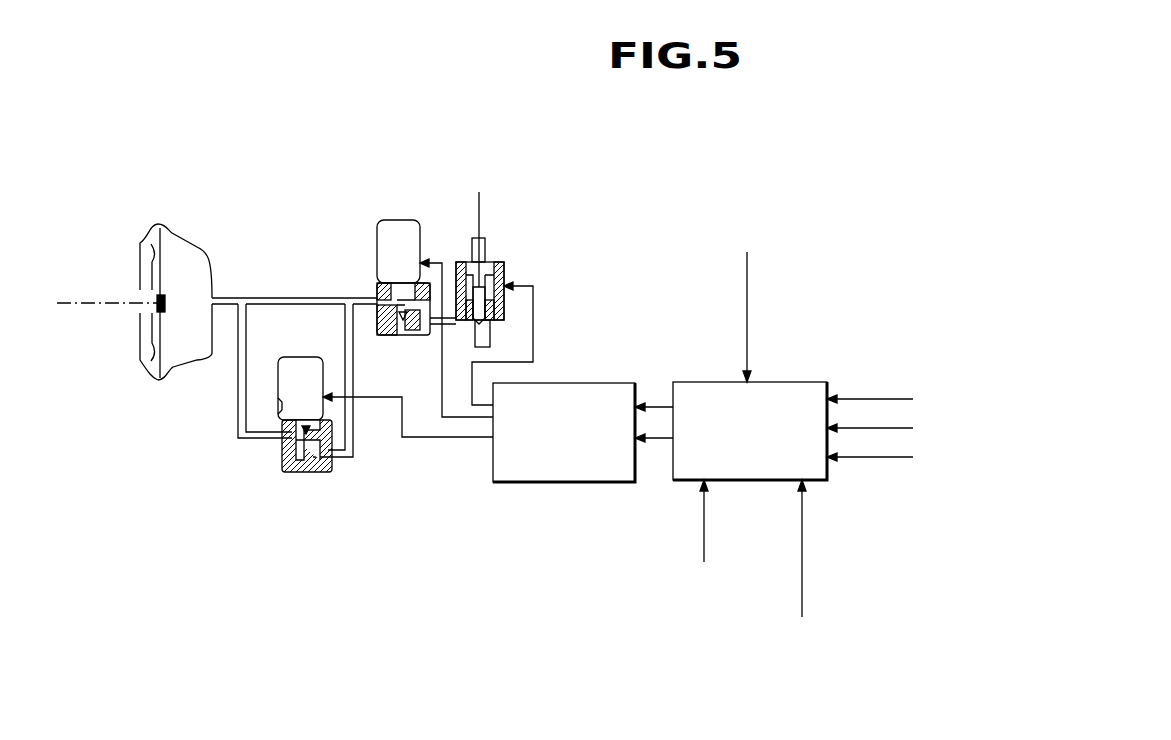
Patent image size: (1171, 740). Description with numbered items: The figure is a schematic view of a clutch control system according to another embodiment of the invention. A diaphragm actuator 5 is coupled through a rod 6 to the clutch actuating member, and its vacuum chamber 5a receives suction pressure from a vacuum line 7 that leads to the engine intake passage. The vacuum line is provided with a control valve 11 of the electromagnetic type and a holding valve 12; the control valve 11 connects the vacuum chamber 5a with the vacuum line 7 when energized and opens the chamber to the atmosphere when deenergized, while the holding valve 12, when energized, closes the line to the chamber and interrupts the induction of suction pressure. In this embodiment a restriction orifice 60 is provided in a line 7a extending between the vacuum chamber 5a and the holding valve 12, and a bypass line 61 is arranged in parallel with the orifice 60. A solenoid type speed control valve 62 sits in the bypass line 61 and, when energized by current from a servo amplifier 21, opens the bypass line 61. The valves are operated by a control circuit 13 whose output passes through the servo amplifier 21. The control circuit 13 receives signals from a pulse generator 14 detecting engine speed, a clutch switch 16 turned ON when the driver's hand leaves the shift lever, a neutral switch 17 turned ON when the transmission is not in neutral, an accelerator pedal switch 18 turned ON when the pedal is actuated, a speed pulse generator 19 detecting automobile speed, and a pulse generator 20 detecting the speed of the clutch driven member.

The diaphragm actuator 5 is at (197, 258).
The vacuum chamber 5a is at (200, 262).
The rod 6 is at (88, 308).
The restriction orifice 60 is at (295, 297).
The line 7a is at (328, 297).
The vacuum line 7 is at (487, 246).
The control valve 11 is at (505, 270).
The holding valve 12 is at (403, 336).
The bypass line 61 is at (353, 358).
The solenoid type speed control valve 62 is at (285, 358).
The servo amplifier 21 is at (600, 383).
The control circuit 13 is at (702, 382).
The pulse generator 20 is at (742, 276).
The speed pulse generator 19 is at (993, 400).
The clutch switch 16 is at (996, 429).
The neutral switch 17 is at (979, 458).
The pulse generator 14 is at (712, 548).
The accelerator pedal switch 18 is at (792, 583).